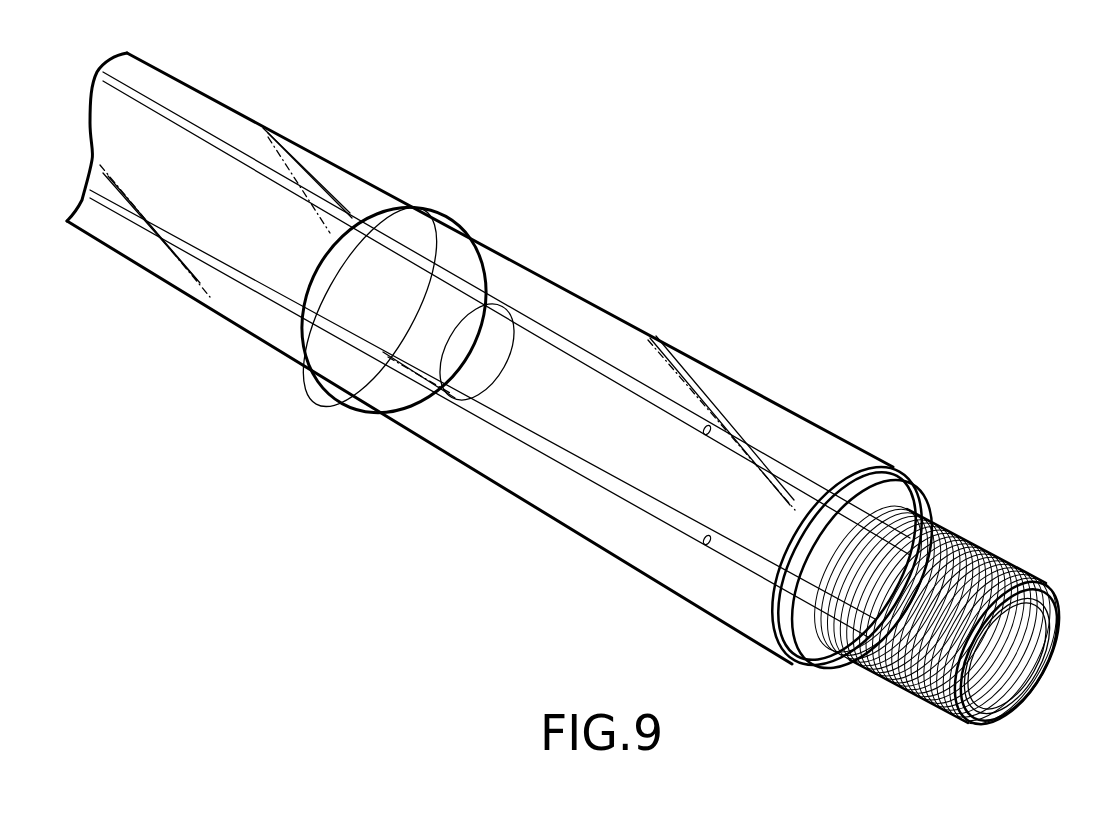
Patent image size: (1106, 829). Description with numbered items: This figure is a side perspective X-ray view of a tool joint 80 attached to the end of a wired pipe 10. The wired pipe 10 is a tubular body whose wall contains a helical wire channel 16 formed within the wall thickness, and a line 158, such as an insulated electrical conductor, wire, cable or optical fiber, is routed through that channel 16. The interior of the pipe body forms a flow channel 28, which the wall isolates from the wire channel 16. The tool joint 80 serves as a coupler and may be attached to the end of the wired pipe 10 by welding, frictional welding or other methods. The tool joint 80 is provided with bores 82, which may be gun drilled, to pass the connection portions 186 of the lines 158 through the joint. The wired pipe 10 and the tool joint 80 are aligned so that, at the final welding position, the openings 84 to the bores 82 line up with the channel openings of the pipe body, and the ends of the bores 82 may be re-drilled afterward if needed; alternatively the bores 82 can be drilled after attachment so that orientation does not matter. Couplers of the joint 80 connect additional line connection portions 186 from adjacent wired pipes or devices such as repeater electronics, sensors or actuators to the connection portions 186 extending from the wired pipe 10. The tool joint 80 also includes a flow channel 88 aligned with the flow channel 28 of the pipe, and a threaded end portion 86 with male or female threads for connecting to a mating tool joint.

The wired pipe 10 is at (287, 147).
The helical wire channel 16 is at (250, 137).
The line 158 is at (330, 188).
The flow channel 28 is at (202, 220).
The opening 84 is at (437, 267).
The line connection portion 186 is at (578, 360).
The flow channel 88 is at (627, 433).
The bore 82 is at (752, 445).
The tool joint 80 is at (568, 570).
The threaded end portion 86 is at (1010, 563).